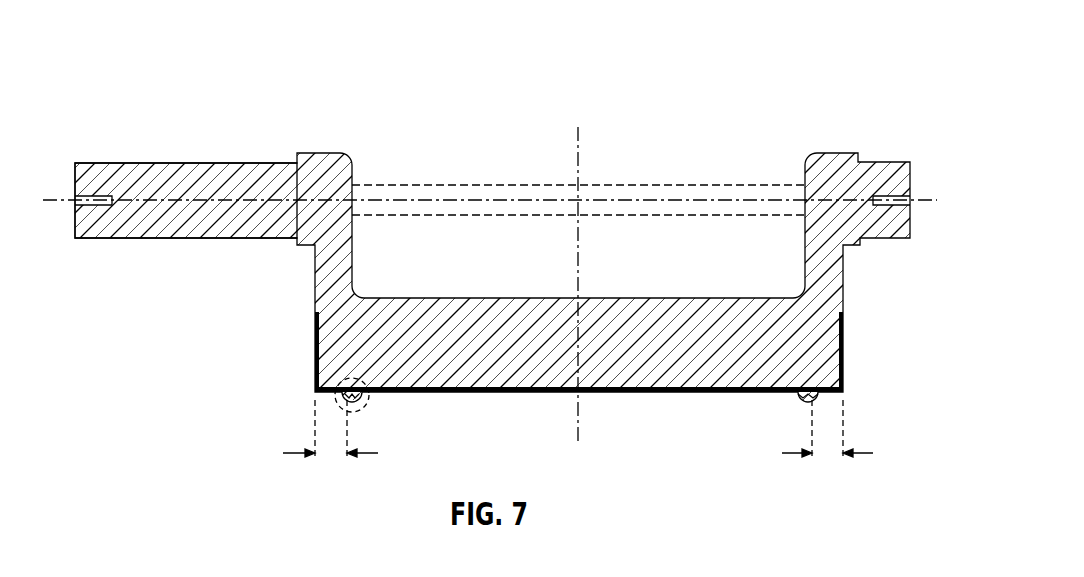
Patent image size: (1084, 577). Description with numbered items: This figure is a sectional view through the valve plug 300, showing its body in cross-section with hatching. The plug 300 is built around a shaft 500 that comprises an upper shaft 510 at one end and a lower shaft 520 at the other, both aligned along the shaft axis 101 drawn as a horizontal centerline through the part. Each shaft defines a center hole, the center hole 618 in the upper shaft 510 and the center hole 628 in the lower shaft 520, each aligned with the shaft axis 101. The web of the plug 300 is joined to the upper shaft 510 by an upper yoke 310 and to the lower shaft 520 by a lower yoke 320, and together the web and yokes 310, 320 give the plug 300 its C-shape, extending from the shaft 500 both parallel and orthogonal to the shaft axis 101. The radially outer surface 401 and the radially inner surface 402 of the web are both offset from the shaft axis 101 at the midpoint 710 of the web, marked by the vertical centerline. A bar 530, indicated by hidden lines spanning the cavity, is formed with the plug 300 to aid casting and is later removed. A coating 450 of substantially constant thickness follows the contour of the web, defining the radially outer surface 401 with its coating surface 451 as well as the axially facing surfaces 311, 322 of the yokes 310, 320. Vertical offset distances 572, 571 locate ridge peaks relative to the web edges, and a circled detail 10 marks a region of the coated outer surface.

The valve plug 300 is at (165, 89).
The shaft 500 is at (163, 162).
The upper shaft 510 is at (186, 200).
The lower shaft 520 is at (878, 161).
The shaft axis 101 is at (930, 200).
The midpoint of the web 710 is at (577, 165).
The bar 530 is at (640, 185).
The center hole 618 is at (95, 208).
The center hole 628 is at (887, 205).
The upper yoke 310 is at (345, 260).
The axially facing surface 311 is at (313, 274).
The lower yoke 320 is at (817, 232).
The axially facing surface 322 is at (845, 298).
The radially inner surface 402 is at (648, 297).
The radially outer surface 401 is at (613, 394).
The coating 450 is at (315, 350).
The coating surface 451 is at (527, 394).
The notch detail 10 is at (355, 410).
The vertical offset distance 572 is at (310, 450).
The vertical offset distance 571 is at (805, 450).